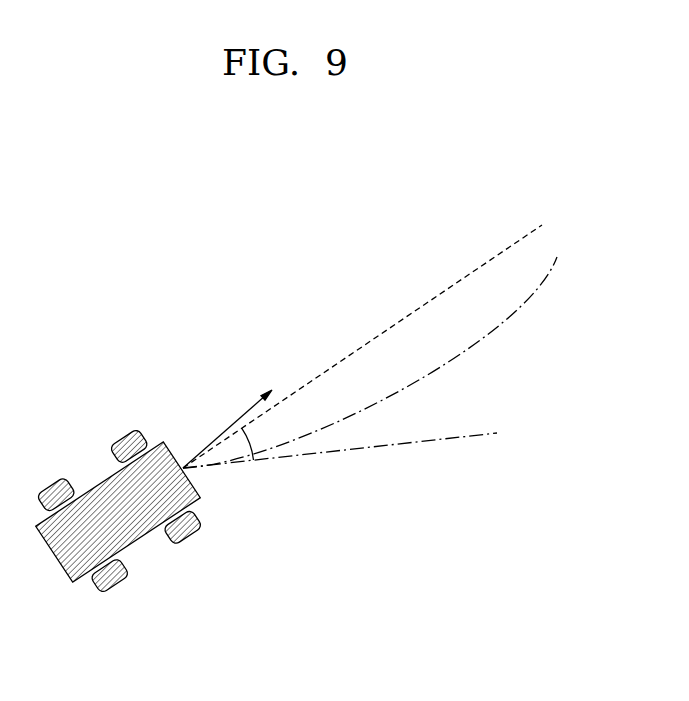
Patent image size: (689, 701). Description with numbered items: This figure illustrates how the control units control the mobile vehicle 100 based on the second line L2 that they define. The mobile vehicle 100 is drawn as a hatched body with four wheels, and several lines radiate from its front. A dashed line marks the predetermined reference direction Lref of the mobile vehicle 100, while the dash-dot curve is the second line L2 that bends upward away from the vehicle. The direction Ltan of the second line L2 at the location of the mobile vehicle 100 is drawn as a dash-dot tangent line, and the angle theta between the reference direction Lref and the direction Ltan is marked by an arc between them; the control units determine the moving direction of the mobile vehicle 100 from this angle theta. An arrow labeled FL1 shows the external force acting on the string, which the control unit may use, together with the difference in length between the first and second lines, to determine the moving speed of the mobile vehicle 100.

The mobile vehicle 100 is at (100, 488).
The external force FL1 is at (227, 418).
The predetermined reference direction Lref is at (518, 240).
The second line L2 is at (495, 328).
The direction of the second line Ltan is at (423, 443).
The angle theta is at (262, 442).